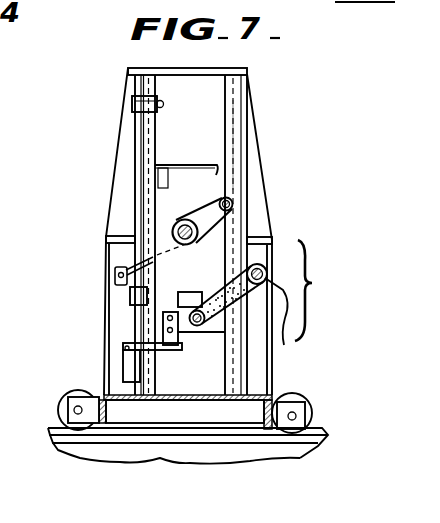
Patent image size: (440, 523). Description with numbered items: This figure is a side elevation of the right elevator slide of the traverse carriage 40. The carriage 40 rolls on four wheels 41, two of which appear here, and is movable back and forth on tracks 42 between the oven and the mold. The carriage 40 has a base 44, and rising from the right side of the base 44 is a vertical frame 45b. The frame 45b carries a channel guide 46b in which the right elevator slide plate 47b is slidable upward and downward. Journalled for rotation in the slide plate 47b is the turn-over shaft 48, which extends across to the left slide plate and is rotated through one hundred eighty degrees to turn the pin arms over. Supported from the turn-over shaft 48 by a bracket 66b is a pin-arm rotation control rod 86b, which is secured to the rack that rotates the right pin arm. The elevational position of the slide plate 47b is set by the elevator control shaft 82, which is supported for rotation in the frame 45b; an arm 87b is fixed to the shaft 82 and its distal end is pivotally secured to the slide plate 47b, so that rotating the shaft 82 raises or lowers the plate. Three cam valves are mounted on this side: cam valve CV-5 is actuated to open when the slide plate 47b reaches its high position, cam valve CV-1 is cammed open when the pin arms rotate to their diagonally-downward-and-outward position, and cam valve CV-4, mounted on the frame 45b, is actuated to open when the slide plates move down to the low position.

The cam valve CV-5 is at (132, 103).
The channel guide 46b is at (143, 126).
The elevator slide plate 47b is at (233, 147).
The bracket 66b is at (213, 200).
The pin-arm rotation control rod 86b is at (243, 210).
The turn-over shaft 48 is at (184, 219).
The vertical frame 45b is at (106, 247).
The cam valve CV-1 is at (130, 292).
The arm 87b is at (209, 305).
The traverse carriage 40 is at (325, 290).
The cam valve CV-4 is at (123, 366).
The elevator control shaft 82 is at (288, 328).
The wheel 41 is at (58, 404).
The track 42 is at (169, 440).
The base 44 is at (212, 418).